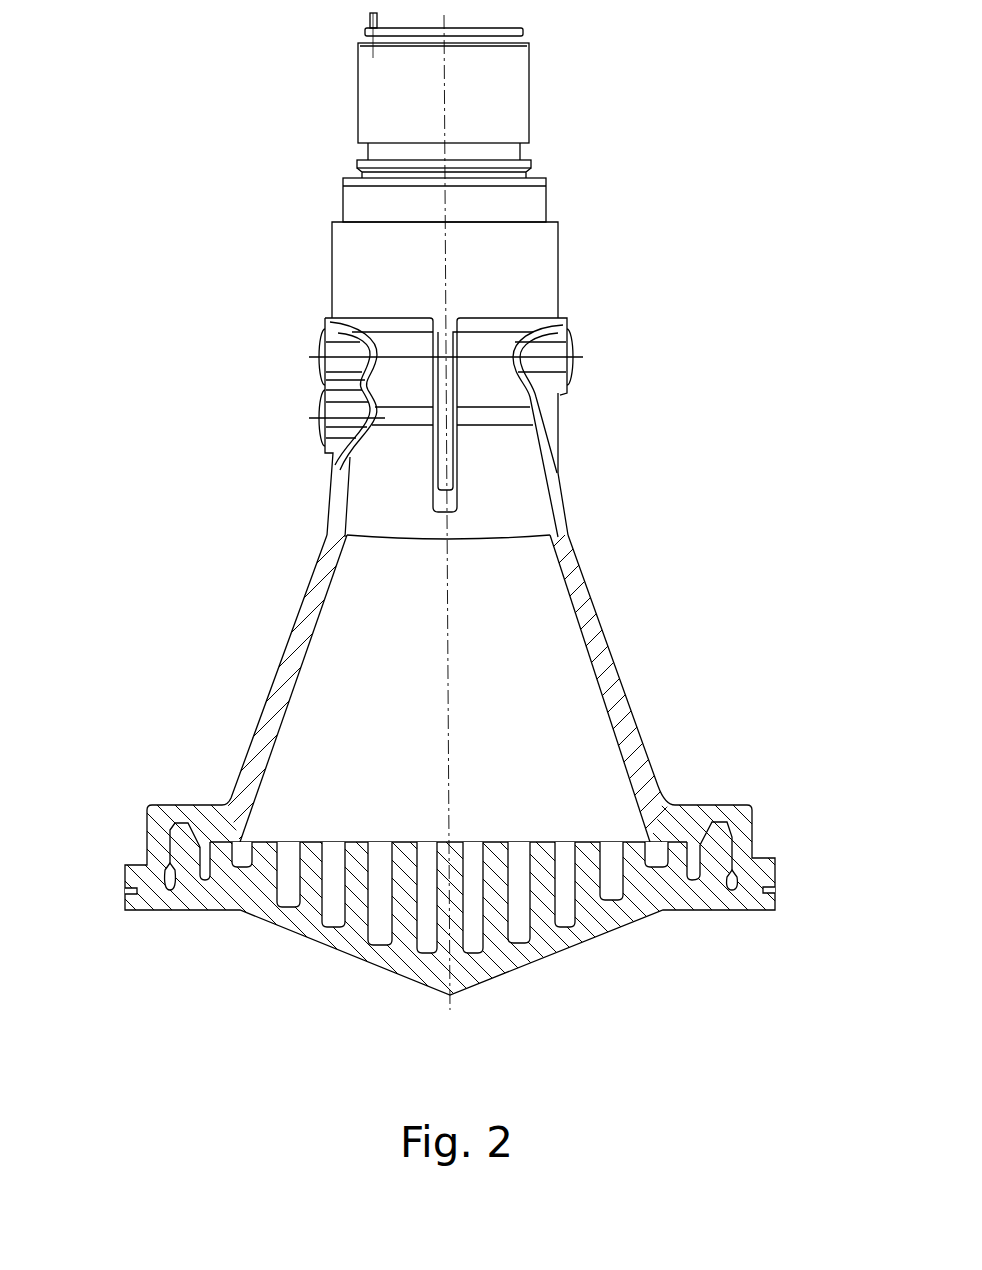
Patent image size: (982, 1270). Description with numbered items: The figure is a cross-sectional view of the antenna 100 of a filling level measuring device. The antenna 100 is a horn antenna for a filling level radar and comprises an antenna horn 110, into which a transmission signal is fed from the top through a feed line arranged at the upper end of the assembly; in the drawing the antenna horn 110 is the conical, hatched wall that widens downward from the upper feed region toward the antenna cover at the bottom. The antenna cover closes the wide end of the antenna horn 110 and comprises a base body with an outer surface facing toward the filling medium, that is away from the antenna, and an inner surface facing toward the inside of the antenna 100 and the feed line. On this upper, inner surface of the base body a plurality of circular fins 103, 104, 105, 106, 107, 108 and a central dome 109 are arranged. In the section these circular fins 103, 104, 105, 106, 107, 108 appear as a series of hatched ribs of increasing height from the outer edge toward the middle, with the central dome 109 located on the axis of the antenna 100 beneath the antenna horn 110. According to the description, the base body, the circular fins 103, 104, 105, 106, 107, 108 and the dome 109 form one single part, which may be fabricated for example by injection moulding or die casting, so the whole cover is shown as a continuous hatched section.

The antenna 100 is at (410, 537).
The circular fin 103 is at (410, 909).
The circular fin 104 is at (223, 857).
The circular fin 105 is at (263, 860).
The circular fin 106 is at (313, 888).
The circular fin 107 is at (358, 857).
The circular fin 108 is at (410, 840).
The central dome 109 is at (457, 925).
The antenna horn 110 is at (610, 662).